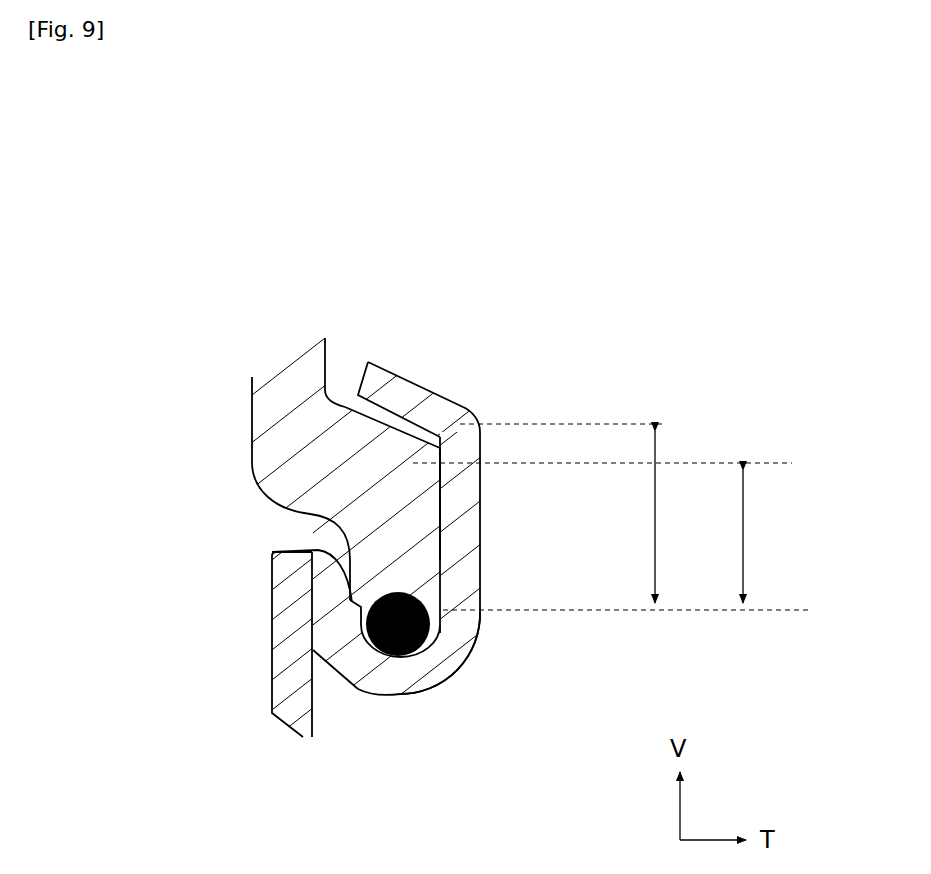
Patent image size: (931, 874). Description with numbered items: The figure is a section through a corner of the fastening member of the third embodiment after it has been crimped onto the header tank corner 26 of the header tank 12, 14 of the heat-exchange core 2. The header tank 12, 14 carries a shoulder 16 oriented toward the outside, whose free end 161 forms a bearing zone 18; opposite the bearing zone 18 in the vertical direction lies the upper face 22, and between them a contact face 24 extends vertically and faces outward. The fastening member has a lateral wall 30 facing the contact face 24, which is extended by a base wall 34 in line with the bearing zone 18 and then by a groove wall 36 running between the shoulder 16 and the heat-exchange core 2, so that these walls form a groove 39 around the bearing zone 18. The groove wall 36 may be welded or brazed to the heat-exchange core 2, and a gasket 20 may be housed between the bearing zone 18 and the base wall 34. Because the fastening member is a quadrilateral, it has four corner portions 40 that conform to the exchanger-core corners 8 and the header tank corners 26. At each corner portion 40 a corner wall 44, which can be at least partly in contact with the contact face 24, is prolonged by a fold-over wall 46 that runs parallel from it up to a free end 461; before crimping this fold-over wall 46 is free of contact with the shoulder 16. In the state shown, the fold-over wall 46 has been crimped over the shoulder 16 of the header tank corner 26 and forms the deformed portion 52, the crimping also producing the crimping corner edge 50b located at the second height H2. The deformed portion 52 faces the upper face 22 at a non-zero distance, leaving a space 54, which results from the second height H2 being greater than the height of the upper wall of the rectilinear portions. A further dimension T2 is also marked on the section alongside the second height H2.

The heat-exchange core 2 is at (280, 692).
The exchanger-core corner 8 is at (305, 657).
The header tank 12 is at (288, 479).
The header tank 14 is at (288, 479).
The shoulder 16 is at (286, 424).
The bearing zone 18 is at (440, 650).
The free end 161 is at (440, 650).
The gasket 20 is at (443, 674).
The upper face 22 is at (397, 408).
The contact face 24 is at (447, 548).
The header tank corner 26 is at (256, 424).
The lateral wall 30 is at (458, 592).
The base wall 34 is at (388, 697).
The groove wall 36 is at (332, 591).
The groove 39 is at (375, 688).
The corner portion 40 is at (448, 668).
The corner wall 44 is at (467, 503).
The fold-over wall 46 is at (430, 399).
The crimping corner edge 50b is at (462, 422).
The deformed portion 52 is at (390, 462).
The space 54 is at (363, 383).
The free end 461 is at (368, 413).
The second height H2 is at (657, 563).
The thickness dimension T2 is at (743, 537).